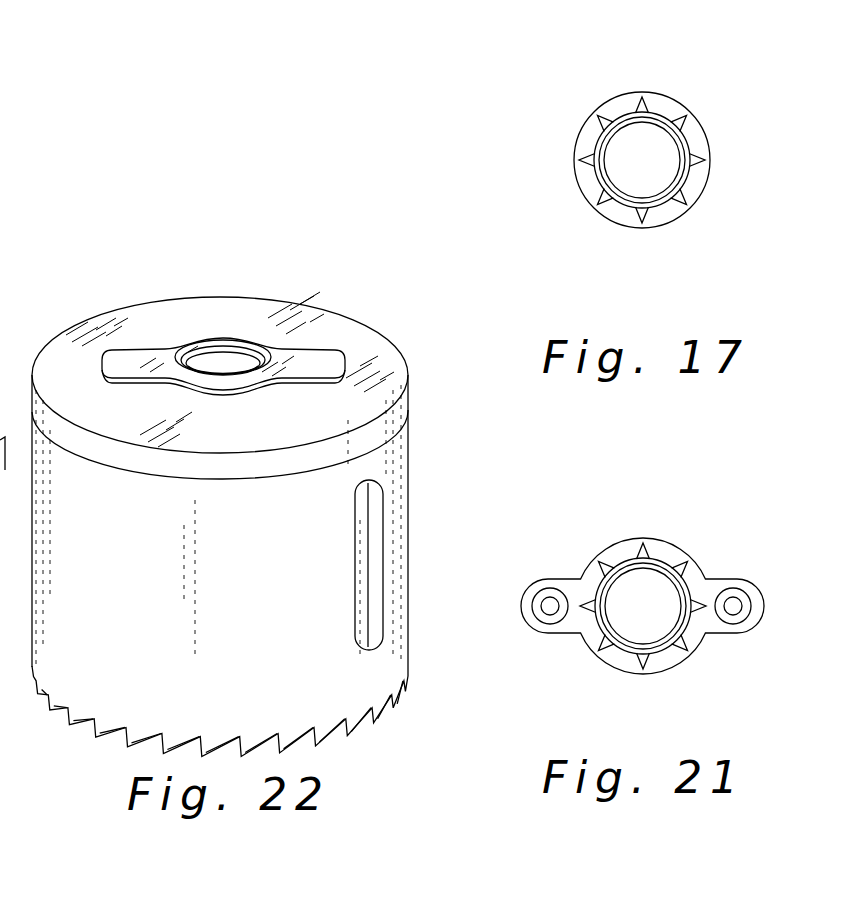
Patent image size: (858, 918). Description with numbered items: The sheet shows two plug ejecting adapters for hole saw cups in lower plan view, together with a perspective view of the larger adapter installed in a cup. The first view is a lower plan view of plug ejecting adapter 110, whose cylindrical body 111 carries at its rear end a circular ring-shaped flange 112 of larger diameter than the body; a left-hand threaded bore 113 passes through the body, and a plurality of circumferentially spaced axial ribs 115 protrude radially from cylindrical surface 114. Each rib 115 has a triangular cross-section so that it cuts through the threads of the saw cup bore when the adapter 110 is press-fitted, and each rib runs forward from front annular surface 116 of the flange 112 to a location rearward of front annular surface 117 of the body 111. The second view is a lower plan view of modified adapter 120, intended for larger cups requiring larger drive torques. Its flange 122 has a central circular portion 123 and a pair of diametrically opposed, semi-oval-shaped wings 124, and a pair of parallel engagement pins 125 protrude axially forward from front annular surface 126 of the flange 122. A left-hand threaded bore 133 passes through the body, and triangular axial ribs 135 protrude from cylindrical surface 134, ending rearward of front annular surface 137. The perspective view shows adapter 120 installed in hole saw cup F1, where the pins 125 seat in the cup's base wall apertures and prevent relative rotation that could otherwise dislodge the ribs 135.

In FIG. 17, the plug ejecting adapter 110 is at (687, 96).
In FIG. 17, the cylindrical body 111 is at (697, 138).
In FIG. 17, the flange 112 is at (707, 187).
In FIG. 17, the left-hand threaded bore 113 is at (642, 160).
In FIG. 17, the cylindrical surface 114 is at (667, 222).
In FIG. 17, the axial ribs 115 is at (633, 215).
In FIG. 17, the front annular surface of flange 116 is at (692, 197).
In FIG. 17, the front annular surface of body 117 is at (598, 180).
In FIG. 21, the modified adapter 120 is at (678, 536).
In FIG. 21, the flange 122 is at (700, 560).
In FIG. 21, the central circular portion 123 is at (743, 583).
In FIG. 22, the wings 124 is at (127, 357).
In FIG. 21, the wings 124 is at (538, 578).
In FIG. 21, the engagement pins 125 is at (737, 607).
In FIG. 21, the front annular surface of flange 126 is at (753, 607).
In FIG. 22, the left-hand threaded bore 133 is at (210, 347).
In FIG. 21, the left-hand threaded bore 133 is at (643, 606).
In FIG. 21, the cylindrical surface 134 is at (668, 648).
In FIG. 21, the axial ribs 135 is at (640, 673).
In FIG. 21, the front annular surface of body 137 is at (597, 623).
In FIG. 22, the hole saw cup F1 is at (412, 465).